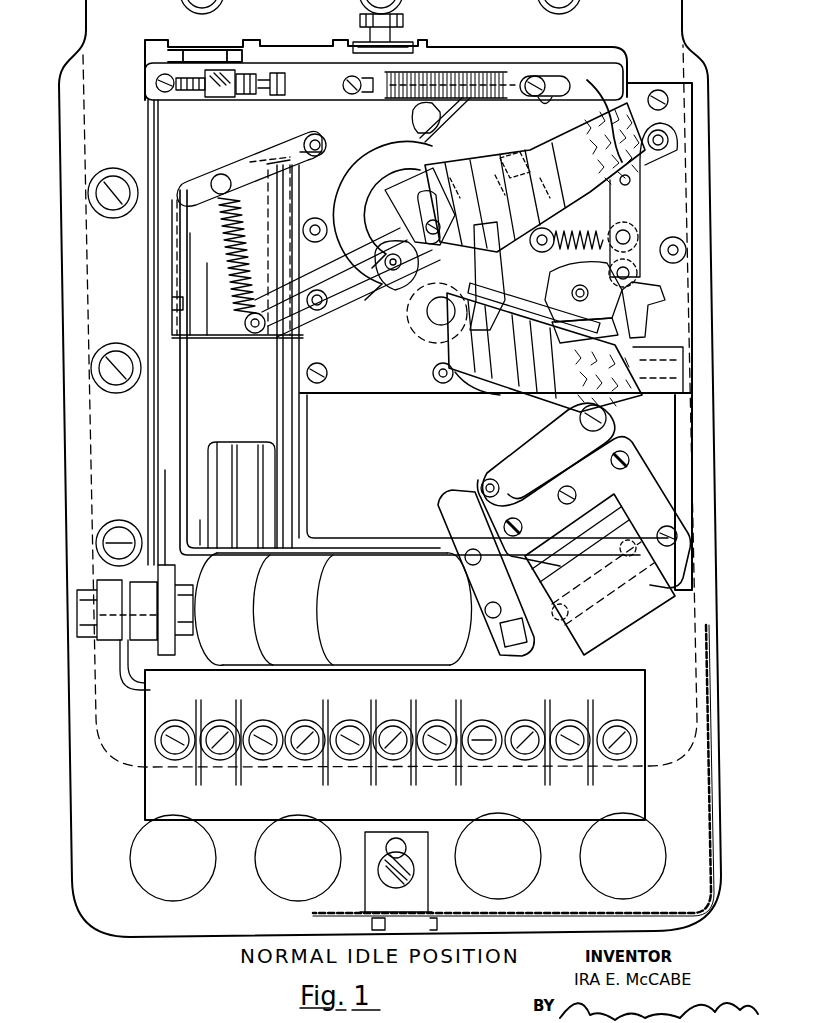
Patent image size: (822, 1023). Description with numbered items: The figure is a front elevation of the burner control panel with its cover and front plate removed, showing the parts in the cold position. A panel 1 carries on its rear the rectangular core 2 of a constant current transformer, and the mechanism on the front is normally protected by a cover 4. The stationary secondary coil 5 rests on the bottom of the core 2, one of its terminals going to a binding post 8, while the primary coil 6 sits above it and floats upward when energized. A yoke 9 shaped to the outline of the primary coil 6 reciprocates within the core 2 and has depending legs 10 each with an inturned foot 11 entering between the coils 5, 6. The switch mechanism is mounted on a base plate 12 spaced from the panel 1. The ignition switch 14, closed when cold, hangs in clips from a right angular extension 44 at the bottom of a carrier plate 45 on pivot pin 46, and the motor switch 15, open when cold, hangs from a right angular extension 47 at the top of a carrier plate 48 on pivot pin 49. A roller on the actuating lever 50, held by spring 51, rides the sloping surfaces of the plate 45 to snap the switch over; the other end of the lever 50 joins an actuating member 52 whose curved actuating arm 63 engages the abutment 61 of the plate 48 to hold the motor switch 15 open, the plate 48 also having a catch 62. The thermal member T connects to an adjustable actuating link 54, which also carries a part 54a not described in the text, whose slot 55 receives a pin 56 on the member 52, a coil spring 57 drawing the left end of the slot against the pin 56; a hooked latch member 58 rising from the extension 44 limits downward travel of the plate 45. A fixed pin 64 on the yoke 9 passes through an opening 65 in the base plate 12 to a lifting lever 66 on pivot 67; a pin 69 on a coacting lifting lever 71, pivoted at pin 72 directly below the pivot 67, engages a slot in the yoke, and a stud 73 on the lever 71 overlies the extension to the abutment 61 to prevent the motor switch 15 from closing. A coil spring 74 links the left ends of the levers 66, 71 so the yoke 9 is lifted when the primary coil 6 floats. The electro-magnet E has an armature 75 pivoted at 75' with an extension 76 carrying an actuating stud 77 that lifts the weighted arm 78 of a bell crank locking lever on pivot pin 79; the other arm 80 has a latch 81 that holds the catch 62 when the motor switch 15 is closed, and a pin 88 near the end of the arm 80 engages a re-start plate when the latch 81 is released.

The panel 1 is at (95, 830).
The rectangular core 2 is at (88, 402).
The cover 4 is at (708, 687).
The secondary coil 5 is at (240, 640).
The primary coil 6 is at (242, 462).
The binding post 8 is at (107, 630).
The yoke 9 is at (207, 282).
The depending legs 10 is at (290, 383).
The inturned foot 11 is at (200, 540).
The base plate 12 is at (667, 428).
The ignition switch 14 is at (542, 372).
The motor switch 15 is at (594, 120).
The right angular extension 44 is at (617, 337).
The ignition switch carrier plate 45 is at (603, 302).
The pivot pin 46 is at (571, 290).
The right angular extension 47 is at (373, 187).
The motor switch carrier plate 48 is at (413, 232).
The pivot pin 49 is at (435, 220).
The actuating lever 50 is at (627, 213).
The spring 51 is at (541, 252).
The actuating member 52 is at (553, 143).
The adjustable actuating link 54 is at (316, 80).
The adjusting block 54a is at (235, 78).
The slot 55 is at (560, 88).
The pin 56 is at (537, 78).
The coil spring 57 is at (488, 76).
The hooked latch member 58 is at (628, 322).
The abutment 61 is at (355, 308).
The catch 62 is at (472, 170).
The curved actuating arm 63 is at (327, 197).
The fixed pin 64 is at (455, 76).
The opening 65 is at (432, 127).
The lifting lever 66 is at (337, 137).
The pivot 67 is at (305, 143).
The pin 69 is at (437, 325).
The coacting lifting lever 71 is at (330, 272).
The pivot pin 72 is at (287, 333).
The stud 73 is at (393, 270).
The coil spring 74 is at (233, 263).
The armature 75 is at (472, 573).
The pivot 75' is at (472, 483).
The extension 76 is at (520, 453).
The actuating stud 77 is at (606, 419).
The weighted arm 78 is at (673, 365).
The pivot pin 79 is at (497, 390).
The arm 80 is at (485, 260).
The latch 81 is at (504, 195).
The pin 88 is at (532, 240).
The thermal member T is at (160, 152).
The electro-magnet E is at (653, 600).